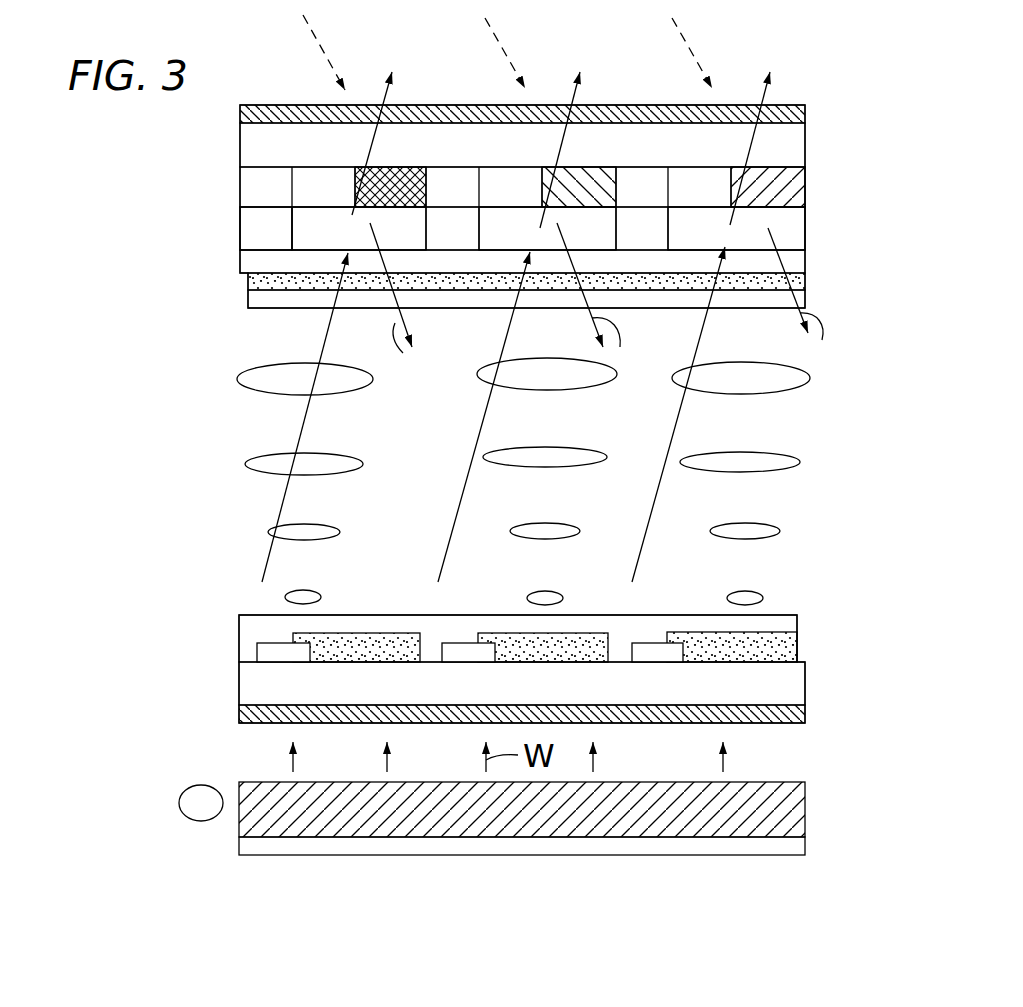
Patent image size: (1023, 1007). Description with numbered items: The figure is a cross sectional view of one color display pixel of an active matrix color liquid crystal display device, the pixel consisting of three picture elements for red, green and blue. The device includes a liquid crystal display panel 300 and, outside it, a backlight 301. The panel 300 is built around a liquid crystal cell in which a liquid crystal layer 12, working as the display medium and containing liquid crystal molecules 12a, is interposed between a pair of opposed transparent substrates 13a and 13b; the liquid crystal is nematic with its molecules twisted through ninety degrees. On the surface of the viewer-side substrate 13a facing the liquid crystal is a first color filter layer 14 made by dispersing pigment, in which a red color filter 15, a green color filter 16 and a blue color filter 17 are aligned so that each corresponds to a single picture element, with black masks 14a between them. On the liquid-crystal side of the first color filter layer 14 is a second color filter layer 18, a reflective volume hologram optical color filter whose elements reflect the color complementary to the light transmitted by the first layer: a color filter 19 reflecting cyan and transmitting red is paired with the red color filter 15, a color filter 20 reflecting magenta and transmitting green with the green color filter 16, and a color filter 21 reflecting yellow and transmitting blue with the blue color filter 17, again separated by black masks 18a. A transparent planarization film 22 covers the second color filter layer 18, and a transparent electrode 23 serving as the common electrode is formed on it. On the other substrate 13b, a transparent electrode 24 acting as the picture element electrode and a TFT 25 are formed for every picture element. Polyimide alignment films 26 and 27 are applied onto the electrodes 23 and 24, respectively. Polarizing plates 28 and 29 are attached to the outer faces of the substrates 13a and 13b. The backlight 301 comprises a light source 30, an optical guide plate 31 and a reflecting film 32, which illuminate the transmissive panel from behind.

The liquid crystal display panel 300 is at (587, 378).
The backlight 301 is at (586, 815).
The polarizing plate 28 is at (805, 110).
The transparent substrate 13a is at (798, 143).
The first color filter layer 14 is at (579, 150).
The black masks 14a is at (254, 167).
The red color filter 15 is at (361, 187).
The green color filter 16 is at (550, 187).
The blue color filter 17 is at (739, 187).
The second color filter layer 18 is at (535, 262).
The black masks 18a is at (245, 240).
The color filter for reflecting cyan light 19 is at (359, 228).
The color filter for reflecting magenta light 20 is at (547, 228).
The color filter for reflecting yellow light 21 is at (736, 228).
The transparent planarization film 22 is at (805, 253).
The transparent electrode 23 is at (805, 278).
The alignment film 26 is at (805, 295).
The liquid crystal layer 12 is at (574, 481).
The liquid crystal molecules 12a is at (810, 378).
The alignment film 27 is at (797, 622).
The transparent electrode 24 is at (797, 648).
The TFT 25 is at (668, 662).
The transparent substrate 13b is at (805, 685).
The polarizing plate 29 is at (582, 722).
The optical guide plate 31 is at (805, 800).
The reflecting film 32 is at (805, 843).
The light source 30 is at (178, 813).